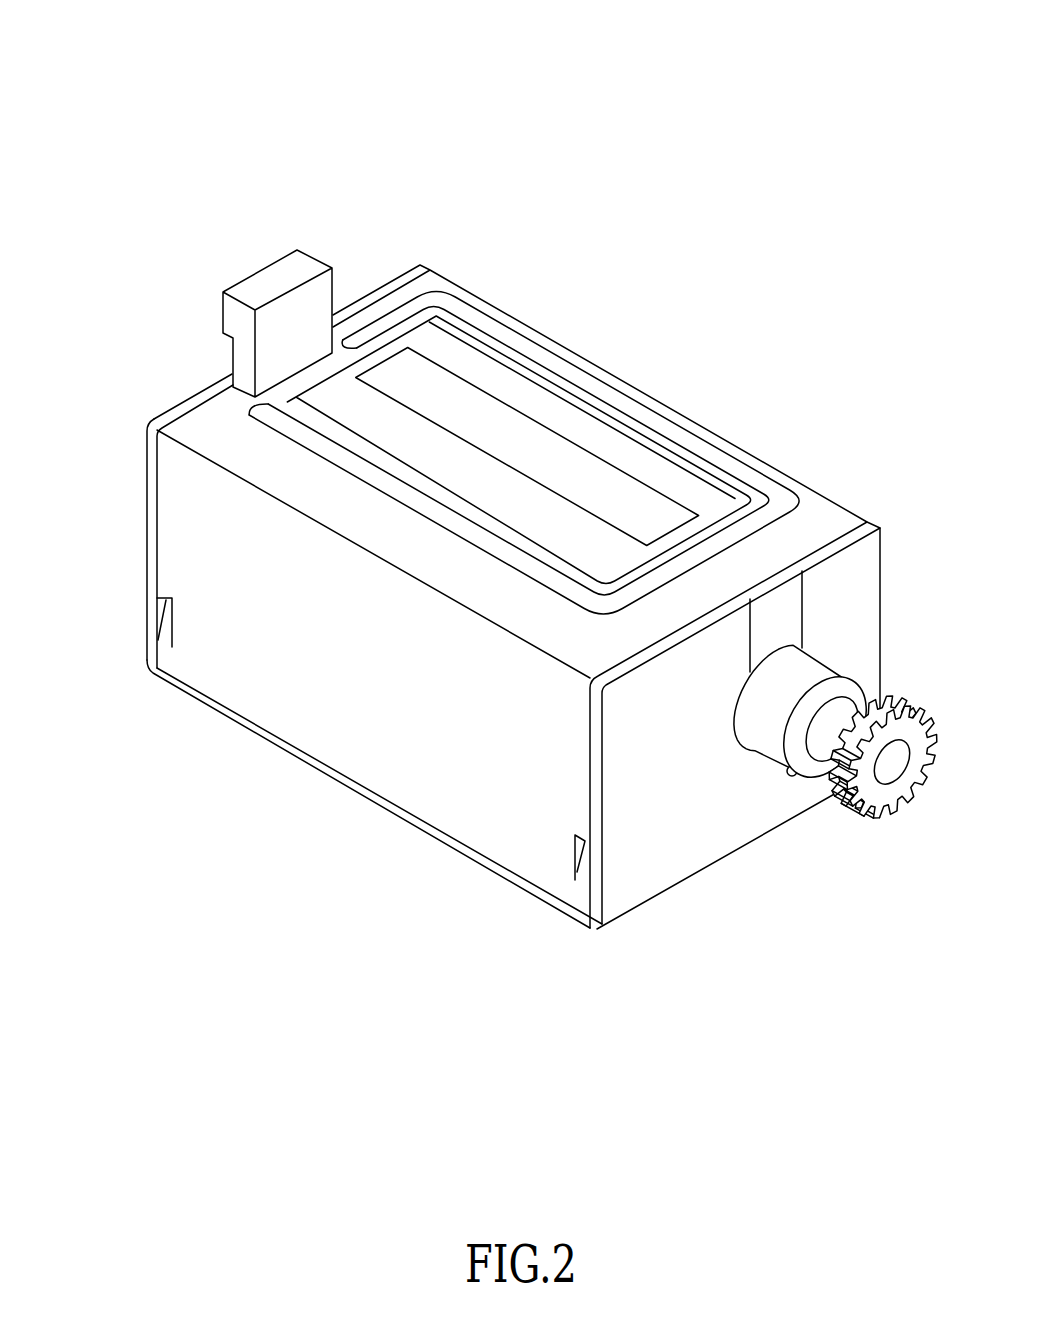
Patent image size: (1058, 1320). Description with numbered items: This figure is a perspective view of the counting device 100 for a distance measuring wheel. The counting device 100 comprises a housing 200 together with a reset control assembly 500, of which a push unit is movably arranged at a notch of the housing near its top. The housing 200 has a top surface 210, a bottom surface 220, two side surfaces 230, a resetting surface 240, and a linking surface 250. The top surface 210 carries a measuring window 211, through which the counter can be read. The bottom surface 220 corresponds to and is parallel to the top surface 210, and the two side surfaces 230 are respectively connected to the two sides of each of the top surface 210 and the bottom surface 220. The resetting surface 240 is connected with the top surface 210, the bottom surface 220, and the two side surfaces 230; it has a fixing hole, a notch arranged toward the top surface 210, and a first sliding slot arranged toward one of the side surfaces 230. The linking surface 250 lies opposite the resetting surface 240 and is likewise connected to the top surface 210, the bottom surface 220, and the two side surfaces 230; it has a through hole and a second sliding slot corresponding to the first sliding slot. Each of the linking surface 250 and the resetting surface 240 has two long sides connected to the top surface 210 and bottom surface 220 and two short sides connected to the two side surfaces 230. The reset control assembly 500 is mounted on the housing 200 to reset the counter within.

The counting device 100 is at (396, 96).
The housing 200 is at (850, 511).
The top surface 210 is at (805, 502).
The measuring window 211 is at (684, 490).
The bottom surface 220 is at (635, 916).
The side surfaces 230 is at (540, 845).
The resetting surface 240 is at (148, 556).
The linking surface 250 is at (698, 828).
The reset control assembly 500 is at (249, 251).